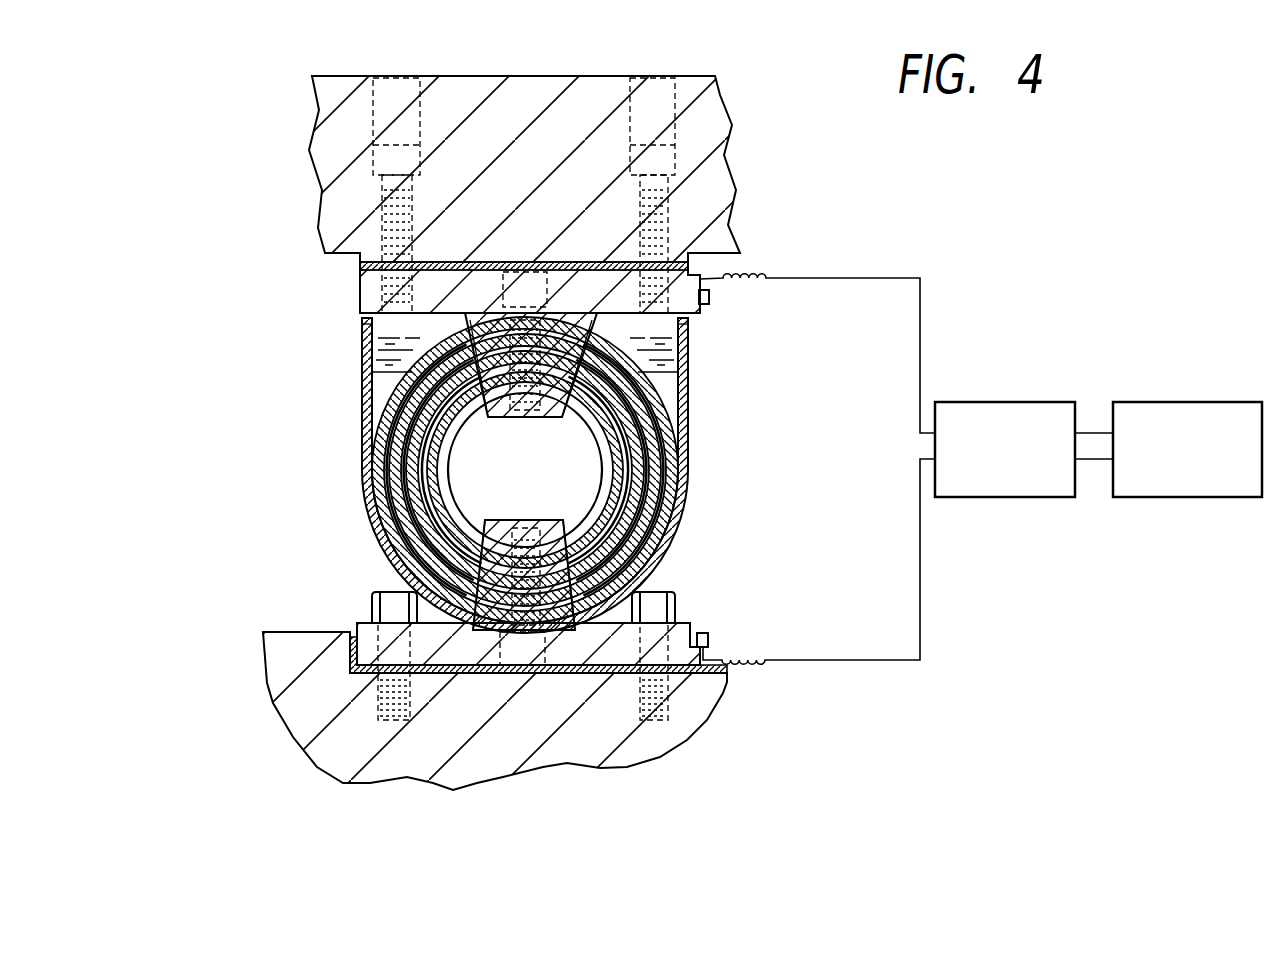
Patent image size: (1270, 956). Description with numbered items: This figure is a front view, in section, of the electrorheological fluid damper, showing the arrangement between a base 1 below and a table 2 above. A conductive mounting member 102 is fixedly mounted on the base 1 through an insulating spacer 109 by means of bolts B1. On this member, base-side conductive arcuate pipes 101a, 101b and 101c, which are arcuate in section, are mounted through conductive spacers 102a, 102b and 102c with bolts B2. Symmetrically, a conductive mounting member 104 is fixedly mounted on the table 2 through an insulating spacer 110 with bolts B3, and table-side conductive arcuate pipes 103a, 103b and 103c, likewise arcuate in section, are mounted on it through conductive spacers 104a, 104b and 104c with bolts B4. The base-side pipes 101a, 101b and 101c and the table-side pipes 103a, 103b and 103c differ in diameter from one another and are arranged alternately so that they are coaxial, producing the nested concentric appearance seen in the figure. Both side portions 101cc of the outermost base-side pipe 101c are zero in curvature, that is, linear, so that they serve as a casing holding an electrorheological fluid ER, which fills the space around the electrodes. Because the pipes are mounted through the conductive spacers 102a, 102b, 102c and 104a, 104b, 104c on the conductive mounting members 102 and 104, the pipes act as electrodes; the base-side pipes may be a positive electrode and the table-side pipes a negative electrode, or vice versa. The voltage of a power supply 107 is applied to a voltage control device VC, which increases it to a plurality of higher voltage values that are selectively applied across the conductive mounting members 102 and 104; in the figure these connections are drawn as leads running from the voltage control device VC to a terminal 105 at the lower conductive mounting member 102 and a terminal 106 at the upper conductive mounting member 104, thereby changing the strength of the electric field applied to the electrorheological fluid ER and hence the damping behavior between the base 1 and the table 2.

The base 1 is at (558, 722).
The table 2 is at (546, 92).
The base-side conductive arcuate pipe 101a is at (497, 560).
The base-side conductive arcuate pipe 101b is at (492, 575).
The base-side conductive arcuate pipe 101c is at (498, 590).
The side portions 101cc is at (362, 326).
The conductive mounting member 102 is at (492, 657).
The conductive spacer 102a is at (660, 700).
The conductive spacer 102b is at (578, 605).
The conductive spacer 102c is at (550, 605).
The table-side conductive arcuate pipe 103a is at (378, 518).
The table-side conductive arcuate pipe 103b is at (398, 453).
The table-side conductive arcuate pipe 103c is at (383, 428).
The conductive mounting member 104 is at (474, 277).
The conductive spacer 104a is at (497, 402).
The conductive spacer 104b is at (455, 374).
The conductive spacer 104c is at (475, 325).
The lower terminal 105 is at (705, 640).
The upper terminal 106 is at (711, 300).
The power supply 107 is at (1210, 402).
The insulating spacer 109 is at (350, 665).
The insulating spacer 110 is at (358, 265).
The bolts B1 is at (370, 603).
The bolts B2 is at (526, 528).
The bolts B3 is at (378, 187).
The bolts B4 is at (532, 418).
The electrorheological fluid ER is at (683, 386).
The voltage control device VC is at (1035, 402).